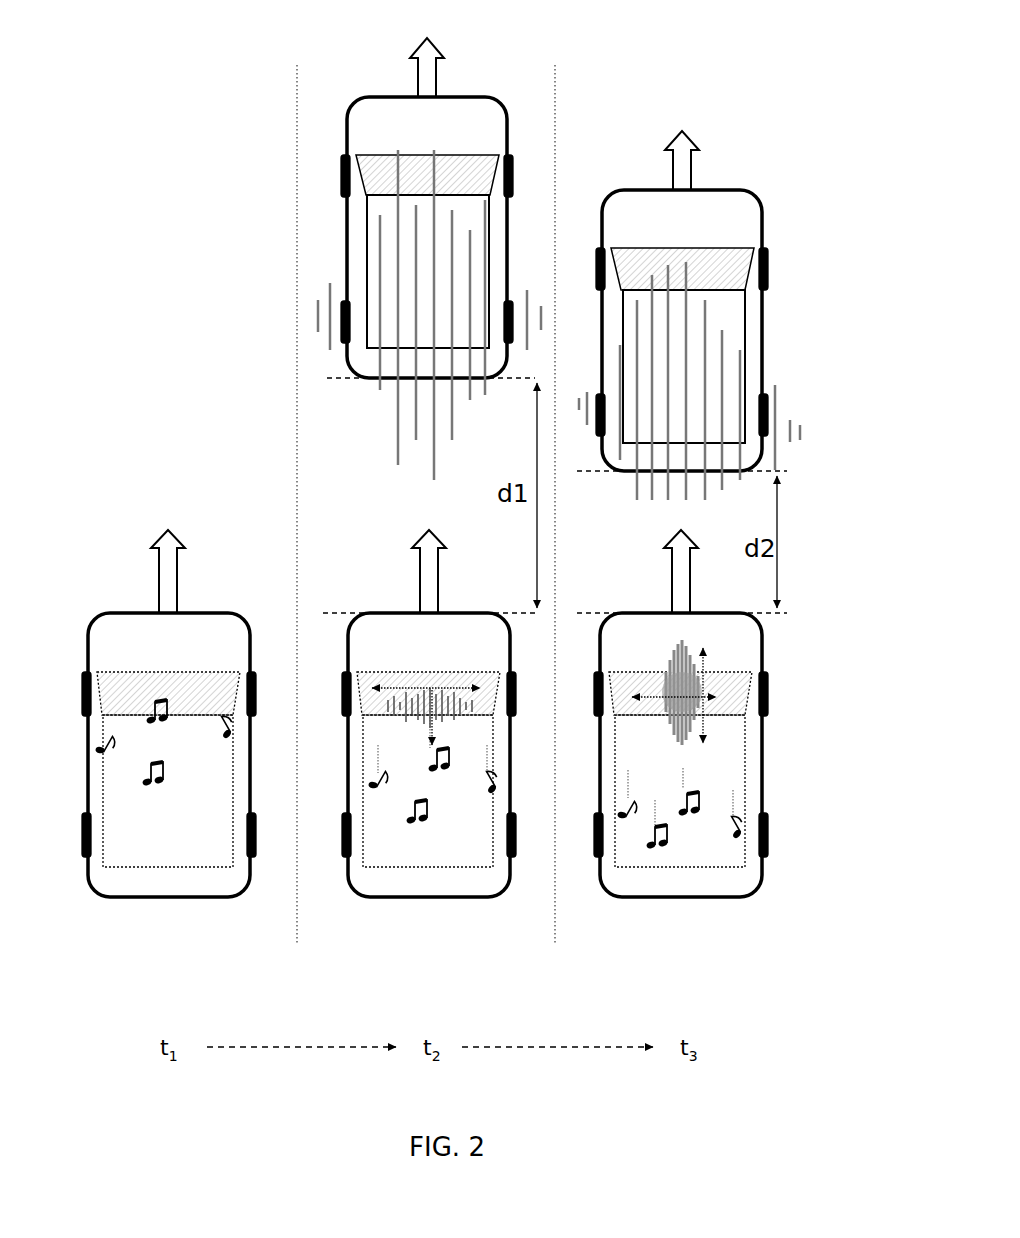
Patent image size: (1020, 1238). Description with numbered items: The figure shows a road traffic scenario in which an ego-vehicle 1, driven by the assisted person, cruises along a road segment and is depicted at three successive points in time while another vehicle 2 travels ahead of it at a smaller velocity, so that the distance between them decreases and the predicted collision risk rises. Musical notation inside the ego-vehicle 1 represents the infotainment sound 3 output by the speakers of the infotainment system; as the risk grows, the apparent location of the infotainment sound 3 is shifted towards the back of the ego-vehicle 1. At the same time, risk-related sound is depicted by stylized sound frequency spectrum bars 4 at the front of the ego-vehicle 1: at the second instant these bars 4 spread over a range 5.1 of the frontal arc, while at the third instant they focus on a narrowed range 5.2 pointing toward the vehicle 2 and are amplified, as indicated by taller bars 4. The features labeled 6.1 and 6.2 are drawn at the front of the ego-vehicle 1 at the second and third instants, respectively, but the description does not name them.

The ego-vehicle 1 is at (203, 899).
The vehicle 2 is at (476, 96).
The infotainment sound 3 is at (114, 765).
The sound frequency spectrum bars 4 is at (385, 700).
The range 5.1 is at (476, 690).
The narrowed range 5.2 is at (712, 698).
The first visual representation of external sound 6.1 is at (436, 700).
The second visual representation of external sound 6.2 is at (706, 688).